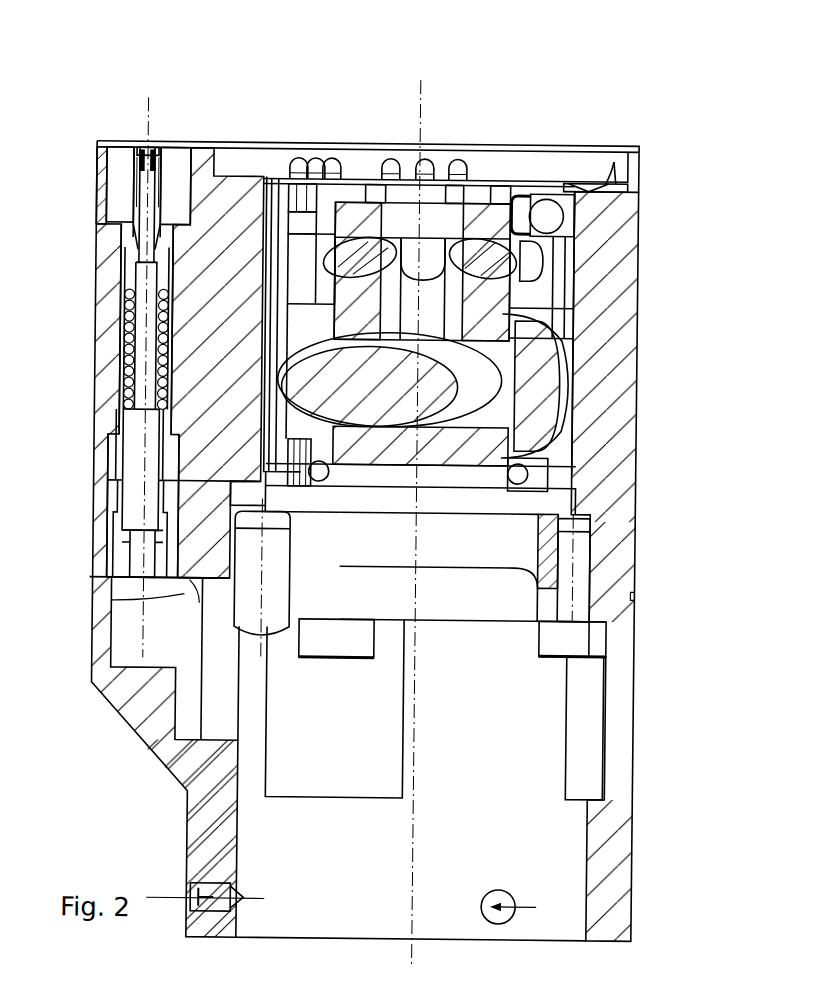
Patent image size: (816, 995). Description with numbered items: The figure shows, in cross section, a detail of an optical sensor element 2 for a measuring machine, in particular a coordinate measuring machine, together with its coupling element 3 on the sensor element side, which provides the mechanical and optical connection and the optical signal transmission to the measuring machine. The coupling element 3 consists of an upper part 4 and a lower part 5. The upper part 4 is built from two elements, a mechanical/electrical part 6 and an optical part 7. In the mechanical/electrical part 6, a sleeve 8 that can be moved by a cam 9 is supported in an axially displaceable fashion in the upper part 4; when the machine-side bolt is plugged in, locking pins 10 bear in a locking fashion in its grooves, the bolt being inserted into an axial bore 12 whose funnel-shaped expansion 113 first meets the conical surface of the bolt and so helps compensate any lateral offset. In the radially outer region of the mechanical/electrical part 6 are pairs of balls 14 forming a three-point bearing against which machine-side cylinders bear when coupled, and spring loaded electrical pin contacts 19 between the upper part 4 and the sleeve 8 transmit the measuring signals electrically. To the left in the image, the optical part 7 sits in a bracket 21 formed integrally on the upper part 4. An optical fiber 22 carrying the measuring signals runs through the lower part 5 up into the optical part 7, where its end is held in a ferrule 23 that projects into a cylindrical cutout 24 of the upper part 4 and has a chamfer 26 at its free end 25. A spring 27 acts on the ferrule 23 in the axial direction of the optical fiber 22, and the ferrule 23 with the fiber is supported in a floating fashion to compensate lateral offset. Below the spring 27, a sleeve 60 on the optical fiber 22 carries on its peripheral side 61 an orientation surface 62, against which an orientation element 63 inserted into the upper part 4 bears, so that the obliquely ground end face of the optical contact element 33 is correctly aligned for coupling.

The optical sensor element 2 is at (536, 90).
The coupling element on the sensor element side 3 is at (202, 138).
The upper part 4 is at (628, 333).
The lower part 5 is at (632, 718).
The mechanical/electrical part 6 is at (545, 146).
The optical part 7 is at (175, 148).
The sleeve 8 is at (512, 345).
The cam 9 is at (472, 392).
The locking pins 10 is at (540, 262).
The axial bore 12 is at (512, 280).
The balls 14 is at (600, 189).
The spring loaded electrical pin contacts 19 is at (458, 130).
The bracket 21 is at (92, 352).
The optical fiber 22 is at (128, 180).
The ferrule 23 is at (134, 198).
The cylindrical cutout 24 is at (118, 151).
The free end 25 is at (151, 162).
The chamfer 26 is at (141, 160).
The spring 27 is at (126, 300).
The optical contact element 33 is at (132, 158).
The sleeve 60 is at (115, 495).
The peripheral side 61 is at (107, 557).
The orientation surface 62 is at (133, 563).
The orientation element 63 is at (195, 592).
The funnel-shaped expansion 113 is at (470, 208).